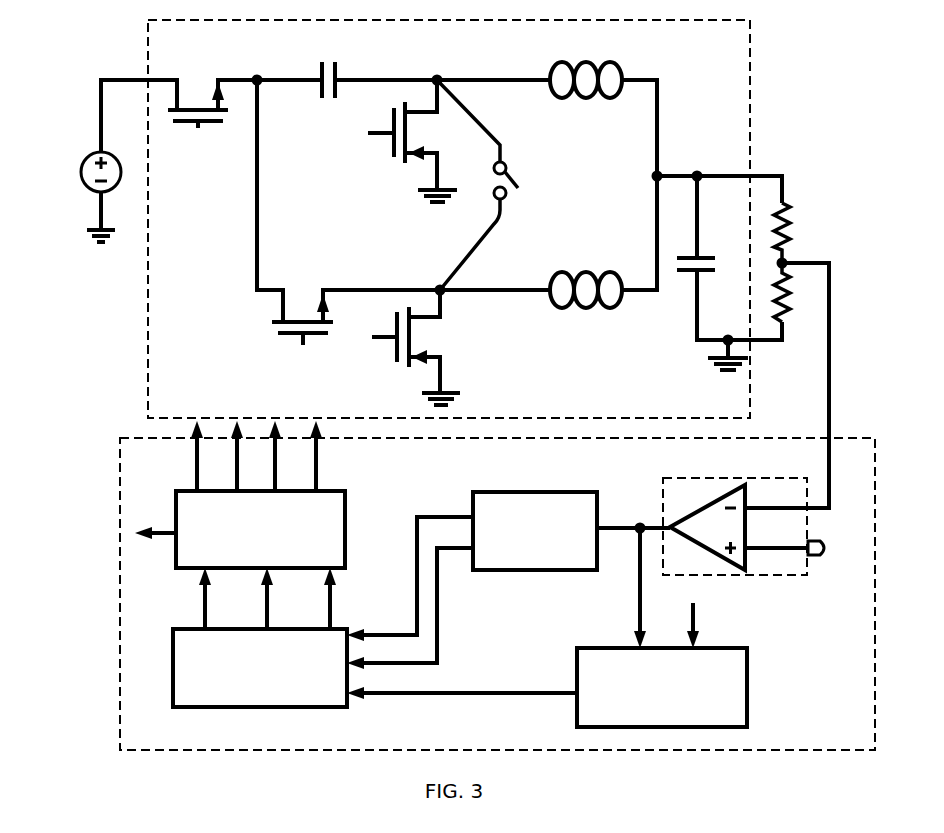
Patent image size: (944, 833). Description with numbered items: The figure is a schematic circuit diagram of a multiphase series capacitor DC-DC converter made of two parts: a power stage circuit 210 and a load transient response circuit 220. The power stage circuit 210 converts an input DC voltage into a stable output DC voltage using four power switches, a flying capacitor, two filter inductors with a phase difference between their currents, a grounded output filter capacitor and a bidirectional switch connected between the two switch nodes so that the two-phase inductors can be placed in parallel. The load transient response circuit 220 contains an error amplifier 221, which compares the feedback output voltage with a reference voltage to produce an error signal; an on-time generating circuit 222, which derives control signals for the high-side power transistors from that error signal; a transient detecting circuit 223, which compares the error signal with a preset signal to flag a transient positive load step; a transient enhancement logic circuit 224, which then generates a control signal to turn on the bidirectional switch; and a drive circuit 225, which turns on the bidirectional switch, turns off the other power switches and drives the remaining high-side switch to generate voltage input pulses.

The power stage circuit 210 is at (225, 290).
The load transient response circuit 220 is at (142, 678).
The error amplifier 221 is at (763, 567).
The on-time generating circuit 222 is at (530, 570).
The transient detecting circuit 223 is at (747, 685).
The transient enhancement logic circuit 224 is at (255, 707).
The drive circuit 225 is at (345, 535).